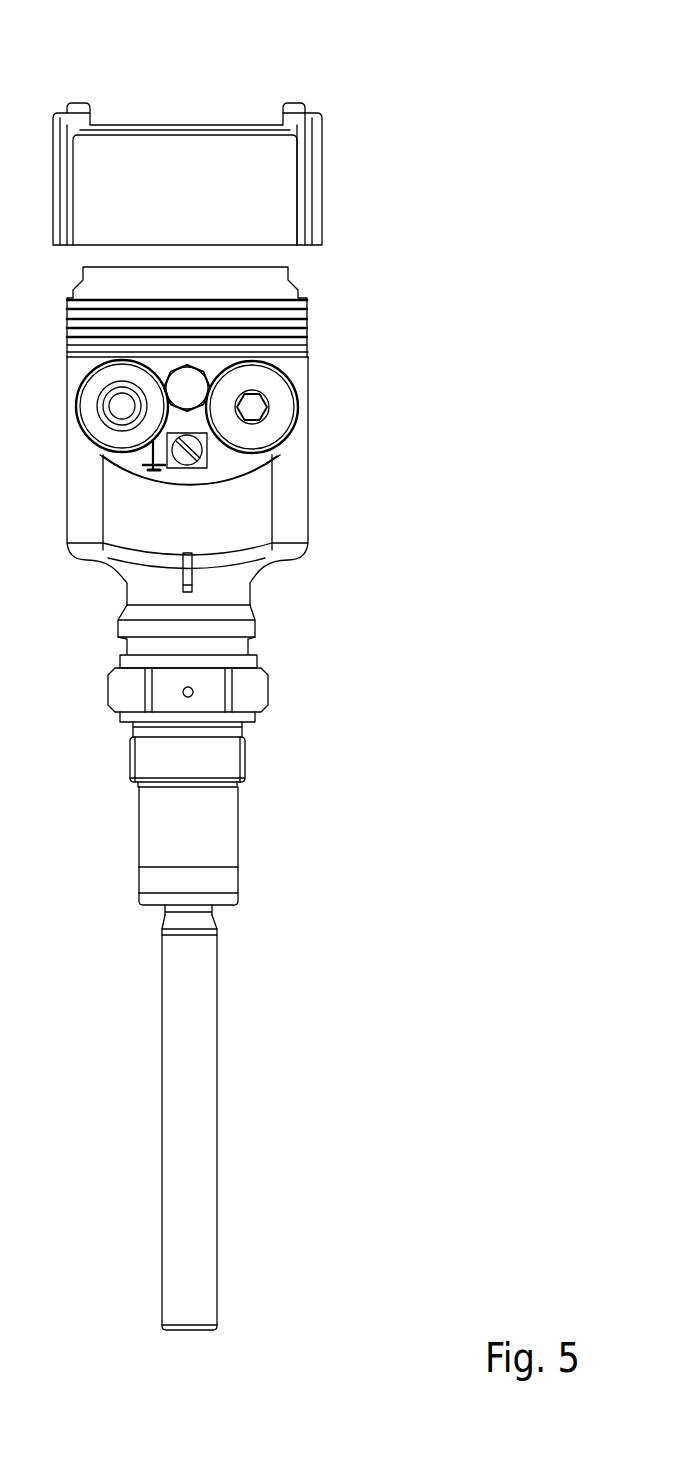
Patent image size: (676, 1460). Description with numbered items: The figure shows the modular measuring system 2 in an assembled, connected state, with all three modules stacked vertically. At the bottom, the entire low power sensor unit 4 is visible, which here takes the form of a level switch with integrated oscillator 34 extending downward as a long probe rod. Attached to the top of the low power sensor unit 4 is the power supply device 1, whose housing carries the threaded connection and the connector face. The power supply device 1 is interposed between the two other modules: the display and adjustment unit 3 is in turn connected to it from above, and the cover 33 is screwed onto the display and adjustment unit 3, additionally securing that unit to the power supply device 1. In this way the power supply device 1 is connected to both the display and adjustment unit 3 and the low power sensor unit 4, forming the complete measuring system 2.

The power supply device 1 is at (320, 383).
The modular measuring system 2 is at (487, 221).
The display and adjustment unit 3 is at (155, 125).
The cover 33 is at (287, 197).
The low power sensor unit 4 is at (290, 503).
The level switch with integrated oscillator 34 is at (202, 1273).